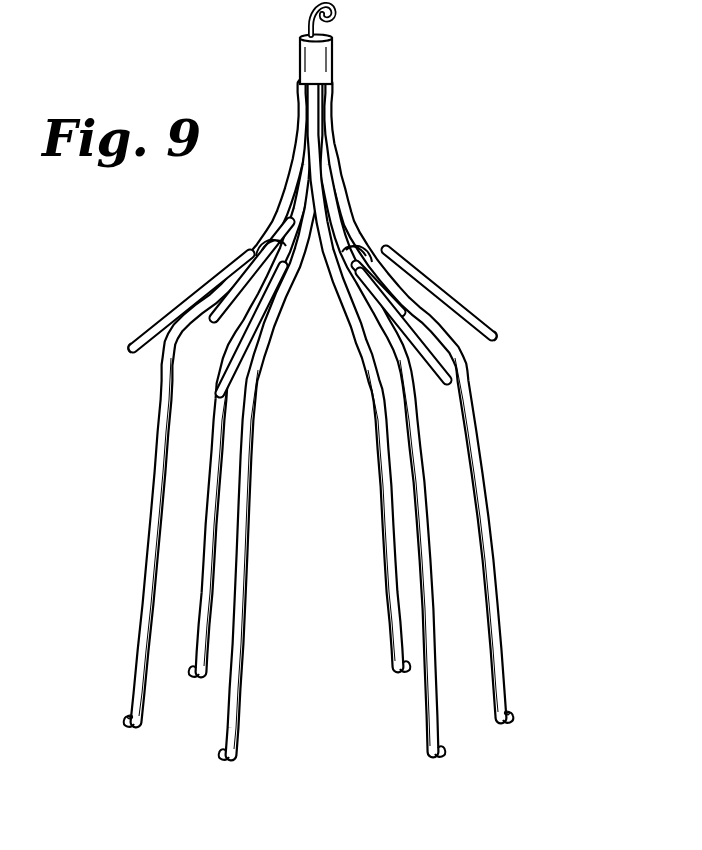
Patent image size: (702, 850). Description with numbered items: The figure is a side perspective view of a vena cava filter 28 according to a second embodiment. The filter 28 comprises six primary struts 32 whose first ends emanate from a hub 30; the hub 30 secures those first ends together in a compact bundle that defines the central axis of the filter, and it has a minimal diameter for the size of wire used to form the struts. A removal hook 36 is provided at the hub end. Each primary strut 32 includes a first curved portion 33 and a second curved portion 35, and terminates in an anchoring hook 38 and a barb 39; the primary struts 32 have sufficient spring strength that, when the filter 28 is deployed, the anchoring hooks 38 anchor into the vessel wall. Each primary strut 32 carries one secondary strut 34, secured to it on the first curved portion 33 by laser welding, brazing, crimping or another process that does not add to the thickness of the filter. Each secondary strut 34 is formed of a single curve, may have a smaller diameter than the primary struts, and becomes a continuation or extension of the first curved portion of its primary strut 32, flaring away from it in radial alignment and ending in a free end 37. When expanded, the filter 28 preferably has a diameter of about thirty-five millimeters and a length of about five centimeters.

The filter 28 is at (322, 394).
The hub 30 is at (336, 62).
The primary strut 32 is at (158, 492).
The first curved portion 33 is at (267, 243).
The secondary strut 34 is at (192, 302).
The second curved portion 35 is at (149, 584).
The removal hook 36 is at (300, 4).
The free end 37 is at (133, 347).
The anchoring hook 38 is at (135, 730).
The barb 39 is at (129, 718).